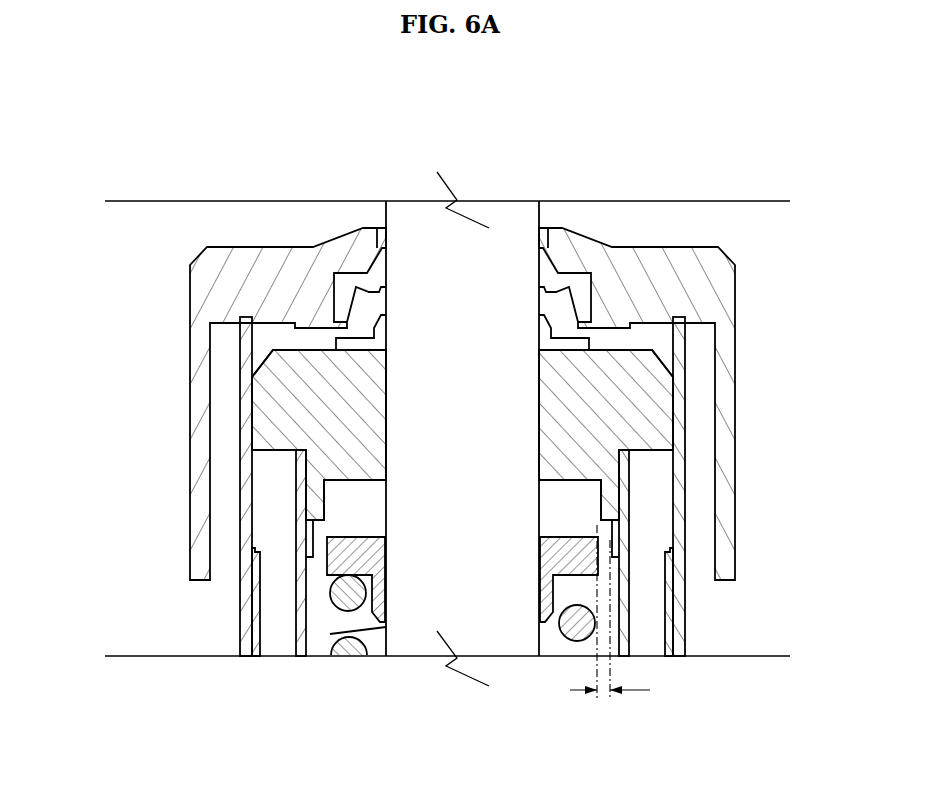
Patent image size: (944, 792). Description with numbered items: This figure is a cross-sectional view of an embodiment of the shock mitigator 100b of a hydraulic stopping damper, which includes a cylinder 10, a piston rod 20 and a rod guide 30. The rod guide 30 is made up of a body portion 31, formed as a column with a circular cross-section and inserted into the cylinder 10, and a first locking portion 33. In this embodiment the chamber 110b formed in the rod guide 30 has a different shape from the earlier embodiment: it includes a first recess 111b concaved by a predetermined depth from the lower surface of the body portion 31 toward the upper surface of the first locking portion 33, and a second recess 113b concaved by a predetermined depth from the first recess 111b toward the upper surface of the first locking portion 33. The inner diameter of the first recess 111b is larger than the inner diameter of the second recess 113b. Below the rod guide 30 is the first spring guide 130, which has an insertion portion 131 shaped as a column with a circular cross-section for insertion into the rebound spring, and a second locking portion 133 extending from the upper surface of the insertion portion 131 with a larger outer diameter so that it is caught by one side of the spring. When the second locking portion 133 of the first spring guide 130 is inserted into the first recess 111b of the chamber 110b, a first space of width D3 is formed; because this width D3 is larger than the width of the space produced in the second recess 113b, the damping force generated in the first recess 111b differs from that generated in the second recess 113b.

The cylinder 10 is at (683, 621).
The piston rod 20 is at (506, 222).
The rod guide 30 is at (803, 395).
The body portion 31 is at (610, 463).
The first locking portion 33 is at (645, 402).
The shock mitigator 100b is at (580, 580).
The chamber 110b is at (338, 508).
The first recess 111b is at (620, 531).
The second recess 113b is at (600, 512).
The first spring guide 130 is at (105, 537).
The insertion portion 131 is at (336, 612).
The second locking portion 133 is at (350, 553).
The width of first space D3 is at (629, 614).